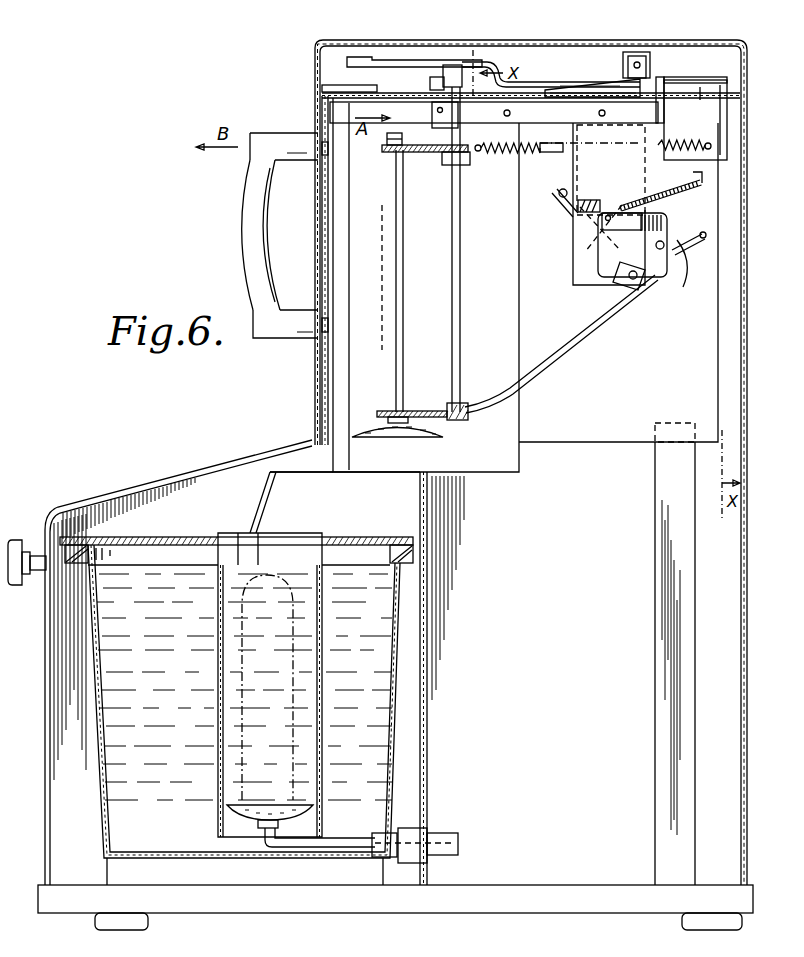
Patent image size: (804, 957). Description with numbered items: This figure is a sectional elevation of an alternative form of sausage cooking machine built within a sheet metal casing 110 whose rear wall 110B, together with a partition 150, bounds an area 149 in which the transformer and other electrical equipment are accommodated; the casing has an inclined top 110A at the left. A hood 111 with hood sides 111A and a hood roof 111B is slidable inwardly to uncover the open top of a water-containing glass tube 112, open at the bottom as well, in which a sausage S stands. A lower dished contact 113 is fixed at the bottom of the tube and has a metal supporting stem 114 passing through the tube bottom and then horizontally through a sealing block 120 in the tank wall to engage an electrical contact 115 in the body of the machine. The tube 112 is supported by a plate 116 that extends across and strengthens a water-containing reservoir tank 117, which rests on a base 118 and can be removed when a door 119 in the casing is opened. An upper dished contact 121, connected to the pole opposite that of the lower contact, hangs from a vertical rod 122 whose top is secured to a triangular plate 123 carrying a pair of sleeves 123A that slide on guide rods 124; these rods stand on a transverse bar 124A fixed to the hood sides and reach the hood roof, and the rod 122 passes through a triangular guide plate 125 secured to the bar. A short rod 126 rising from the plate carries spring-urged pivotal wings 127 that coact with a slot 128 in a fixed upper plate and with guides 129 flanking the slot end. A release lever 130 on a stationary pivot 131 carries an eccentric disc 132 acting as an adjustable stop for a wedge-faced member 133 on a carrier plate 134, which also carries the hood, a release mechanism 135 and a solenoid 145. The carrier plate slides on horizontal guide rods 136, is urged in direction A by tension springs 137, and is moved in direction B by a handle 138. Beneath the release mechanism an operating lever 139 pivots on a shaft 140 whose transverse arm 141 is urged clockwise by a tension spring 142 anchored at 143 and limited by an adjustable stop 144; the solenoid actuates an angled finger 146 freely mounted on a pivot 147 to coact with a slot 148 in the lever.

The sheet metal casing 110 is at (150, 474).
The inclined top wall 110A is at (225, 460).
The rear wall 110B is at (749, 52).
The hood 111 is at (317, 112).
The hood sides 111A is at (388, 315).
The hood roof 111B is at (335, 88).
The glass tube 112 is at (218, 548).
The lower dished contact 113 is at (268, 804).
The metal supporting stem 114 is at (348, 840).
The electrical contact 115 is at (447, 830).
The plate 116 is at (160, 541).
The reservoir tank 117 is at (96, 749).
The base 118 is at (112, 873).
The door 119 is at (56, 812).
The sealing block 120 is at (393, 830).
The upper dished contact 121 is at (398, 432).
The vertical rod 122 is at (403, 334).
The triangular plate 123 is at (410, 153).
The sleeves 123A is at (443, 156).
The guide rods 124 is at (452, 236).
The transverse bar 124A is at (463, 421).
The triangular guide plate 125 is at (430, 411).
The short rod 126 is at (452, 127).
The pivotal wings 127 is at (438, 67).
The slot 128 is at (397, 88).
The guides 129 is at (335, 93).
The release lever 130 is at (497, 70).
The stationary pivot 131 is at (639, 60).
The eccentric disc 132 is at (566, 92).
The wedge-faced member 133 is at (650, 90).
The carrier plate 134 is at (627, 108).
The release mechanism 135 is at (690, 237).
The horizontal guide rods 136 is at (701, 90).
The tension springs 137 is at (704, 146).
The handle 138 is at (257, 181).
The operating lever 139 is at (585, 333).
The shaft 140 is at (636, 288).
The transverse arm 141 is at (557, 212).
The tension spring 142 is at (662, 198).
The anchorage 143 is at (693, 180).
The adjustable stop 144 is at (563, 189).
The solenoid 145 is at (595, 188).
The angled finger 146 is at (620, 258).
The pivot 147 is at (664, 243).
The slot 148 is at (683, 287).
The area 149 is at (601, 654).
The partition 150 is at (431, 640).
The bag S is at (243, 664).